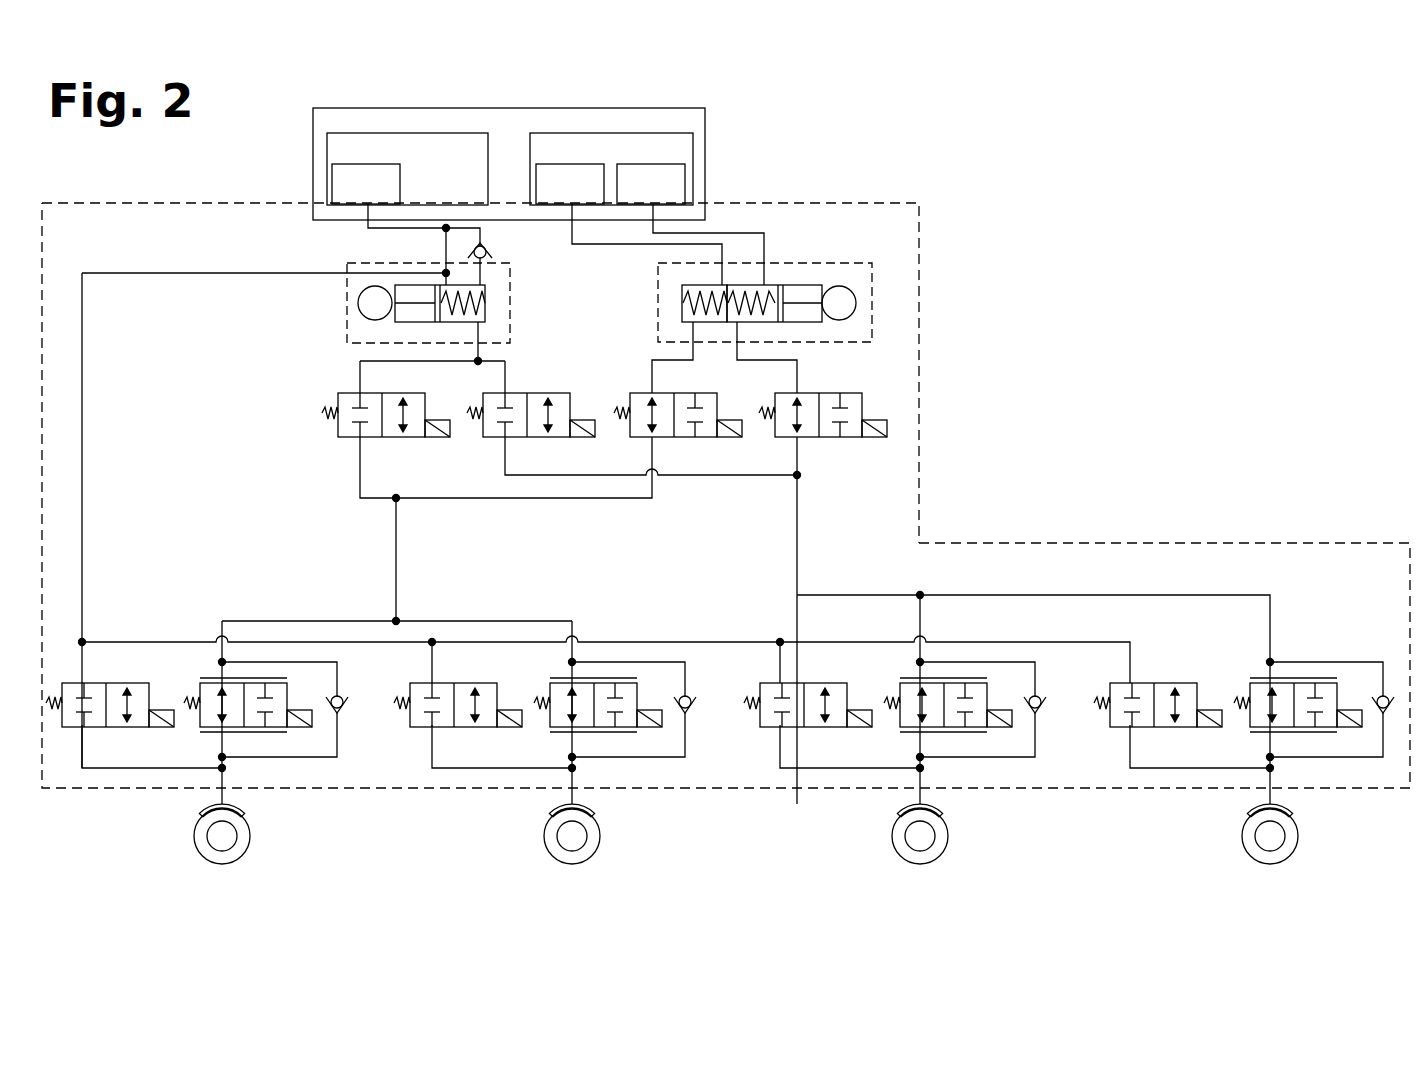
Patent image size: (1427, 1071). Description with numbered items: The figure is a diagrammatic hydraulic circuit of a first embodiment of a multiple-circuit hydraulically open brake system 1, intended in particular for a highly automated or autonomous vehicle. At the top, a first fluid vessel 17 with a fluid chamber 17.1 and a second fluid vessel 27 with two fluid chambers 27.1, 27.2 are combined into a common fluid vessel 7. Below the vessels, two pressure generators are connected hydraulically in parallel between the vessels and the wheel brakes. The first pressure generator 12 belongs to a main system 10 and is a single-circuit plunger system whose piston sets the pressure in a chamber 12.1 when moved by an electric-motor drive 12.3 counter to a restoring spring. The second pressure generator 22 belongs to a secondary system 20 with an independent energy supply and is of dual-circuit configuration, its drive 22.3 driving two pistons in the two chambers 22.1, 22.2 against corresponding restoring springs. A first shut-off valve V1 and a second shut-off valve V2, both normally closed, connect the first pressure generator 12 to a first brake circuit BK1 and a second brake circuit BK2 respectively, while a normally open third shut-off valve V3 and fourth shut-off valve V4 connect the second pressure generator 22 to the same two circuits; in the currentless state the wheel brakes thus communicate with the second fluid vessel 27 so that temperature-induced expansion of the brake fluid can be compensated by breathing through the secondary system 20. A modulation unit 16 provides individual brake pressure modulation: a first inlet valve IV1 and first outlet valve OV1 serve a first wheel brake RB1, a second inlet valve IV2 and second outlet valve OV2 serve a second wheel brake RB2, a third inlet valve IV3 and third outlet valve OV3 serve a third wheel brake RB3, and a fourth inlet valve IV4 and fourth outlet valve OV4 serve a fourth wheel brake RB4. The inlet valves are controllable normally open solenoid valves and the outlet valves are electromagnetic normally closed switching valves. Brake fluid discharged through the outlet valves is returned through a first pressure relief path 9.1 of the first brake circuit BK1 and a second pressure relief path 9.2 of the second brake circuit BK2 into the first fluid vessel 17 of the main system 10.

The multiple-circuit hydraulically open brake system 1 is at (1235, 232).
The common fluid vessel 7 is at (313, 185).
The first pressure relief path 9.1 is at (175, 642).
The second pressure relief path 9.2 is at (870, 640).
The main system 10 is at (1138, 543).
The first pressure generator 12 is at (347, 341).
The chamber 12.1 is at (485, 293).
The drive 12.3 is at (357, 303).
The modulation unit 16 is at (1200, 387).
The first fluid vessel 17 is at (327, 152).
The fluid chamber 17.1 is at (332, 181).
The secondary system 20 is at (872, 268).
The second pressure generator 22 is at (867, 343).
The chamber 22.1 is at (772, 285).
The chamber 22.2 is at (682, 318).
The drive 22.3 is at (856, 303).
The second fluid vessel 27 is at (660, 133).
The fluid chamber 27.1 is at (678, 165).
The fluid chamber 27.2 is at (545, 162).
The first shut-off valve V1 is at (386, 432).
The second shut-off valve V2 is at (531, 432).
The third shut-off valve V3 is at (678, 432).
The fourth shut-off valve V4 is at (823, 432).
The first outlet valve OV1 is at (134, 725).
The second outlet valve OV2 is at (483, 725).
The third outlet valve OV3 is at (832, 725).
The fourth outlet valve OV4 is at (1182, 725).
The first inlet valve IV1 is at (258, 712).
The second inlet valve IV2 is at (606, 712).
The third inlet valve IV3 is at (956, 712).
The fourth inlet valve IV4 is at (1305, 712).
The first wheel brake RB1 is at (222, 864).
The second wheel brake RB2 is at (572, 864).
The third wheel brake RB3 is at (920, 864).
The fourth wheel brake RB4 is at (1270, 864).
The first brake circuit BK1 is at (379, 848).
The second brake circuit BK2 is at (1094, 848).